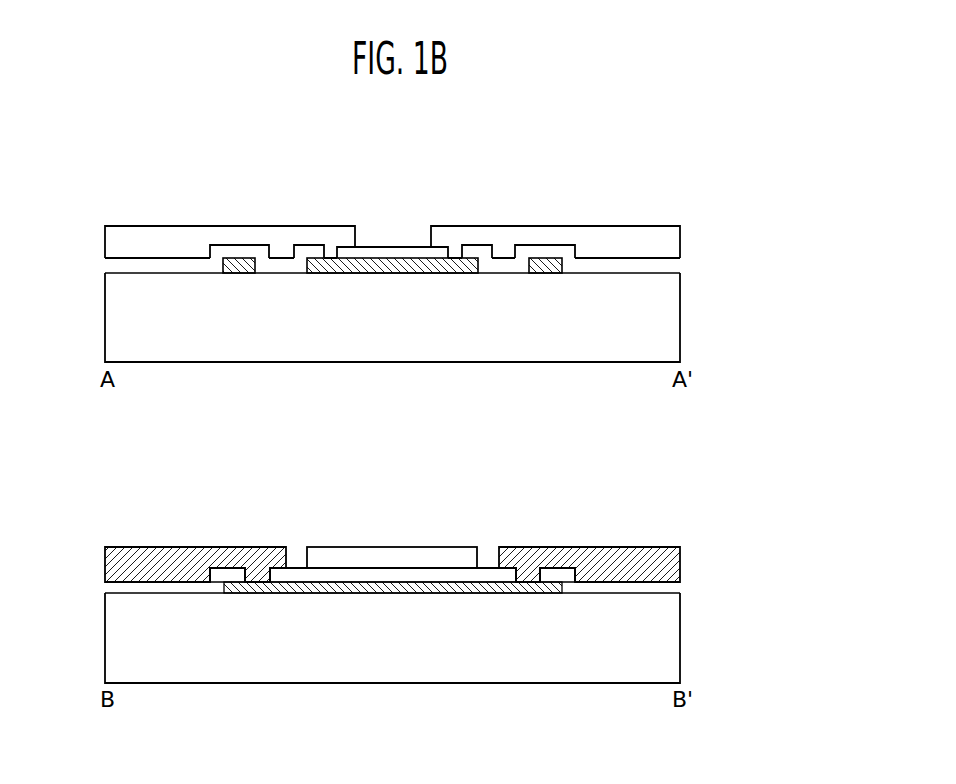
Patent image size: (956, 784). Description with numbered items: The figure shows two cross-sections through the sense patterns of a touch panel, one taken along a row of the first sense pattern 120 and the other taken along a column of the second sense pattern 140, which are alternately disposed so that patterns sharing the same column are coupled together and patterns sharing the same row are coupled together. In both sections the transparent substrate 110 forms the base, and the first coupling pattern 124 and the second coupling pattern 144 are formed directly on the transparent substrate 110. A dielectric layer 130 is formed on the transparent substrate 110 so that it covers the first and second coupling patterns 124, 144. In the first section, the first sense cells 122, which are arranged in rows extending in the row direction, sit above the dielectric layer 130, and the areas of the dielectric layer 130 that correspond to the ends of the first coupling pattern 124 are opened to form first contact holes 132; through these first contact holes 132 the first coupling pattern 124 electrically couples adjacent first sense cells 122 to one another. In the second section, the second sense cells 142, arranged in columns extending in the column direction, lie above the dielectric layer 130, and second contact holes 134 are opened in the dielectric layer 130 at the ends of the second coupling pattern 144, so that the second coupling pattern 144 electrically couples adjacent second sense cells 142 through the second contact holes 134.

The transparent substrate 110 is at (670, 311).
The first sense pattern 120 is at (573, 141).
The first sense cell 122 is at (188, 238).
The first coupling pattern 124 is at (395, 252).
The dielectric layer 130 is at (670, 265).
The first contact hole 132 is at (330, 230).
The second contact hole 134 is at (255, 583).
The second sense pattern 140 is at (573, 474).
The second sense cell 142 is at (188, 560).
The second coupling pattern 144 is at (241, 273).